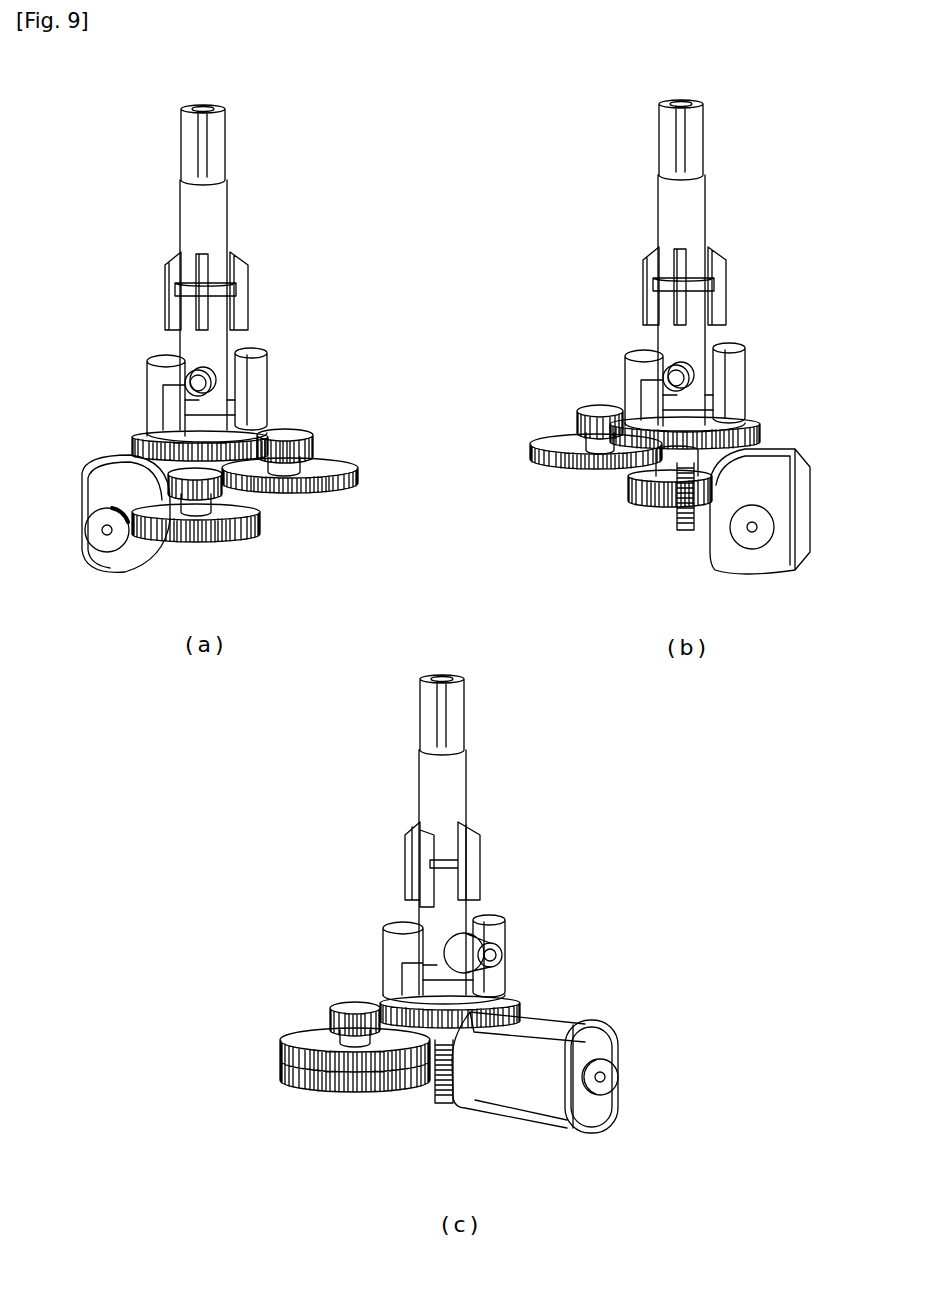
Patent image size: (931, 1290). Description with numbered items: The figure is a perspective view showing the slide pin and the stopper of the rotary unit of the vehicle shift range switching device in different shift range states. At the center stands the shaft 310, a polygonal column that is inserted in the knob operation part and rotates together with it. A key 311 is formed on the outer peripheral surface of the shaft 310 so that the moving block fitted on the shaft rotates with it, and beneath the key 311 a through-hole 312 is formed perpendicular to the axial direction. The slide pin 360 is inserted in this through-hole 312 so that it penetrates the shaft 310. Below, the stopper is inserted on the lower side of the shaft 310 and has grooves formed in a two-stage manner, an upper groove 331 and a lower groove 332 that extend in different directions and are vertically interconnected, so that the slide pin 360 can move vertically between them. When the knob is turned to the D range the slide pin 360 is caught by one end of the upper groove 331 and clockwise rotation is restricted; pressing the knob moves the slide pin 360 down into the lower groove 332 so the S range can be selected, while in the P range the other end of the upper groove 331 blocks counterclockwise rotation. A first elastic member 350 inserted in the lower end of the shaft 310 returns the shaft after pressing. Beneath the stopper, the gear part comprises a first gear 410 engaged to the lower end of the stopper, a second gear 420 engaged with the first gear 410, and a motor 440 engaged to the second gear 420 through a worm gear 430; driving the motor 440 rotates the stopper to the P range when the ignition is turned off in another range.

The shaft 310 is at (232, 186).
The key 311 is at (241, 264).
The through-hole 312 is at (208, 372).
The upper groove 331 is at (252, 377).
The lower groove 332 is at (160, 408).
The first elastic member 350 is at (688, 531).
The slide pin 360 is at (182, 374).
The first gear 410 is at (316, 490).
The second gear 420 is at (237, 545).
The worm gear 430 is at (113, 541).
The motor 440 is at (96, 466).